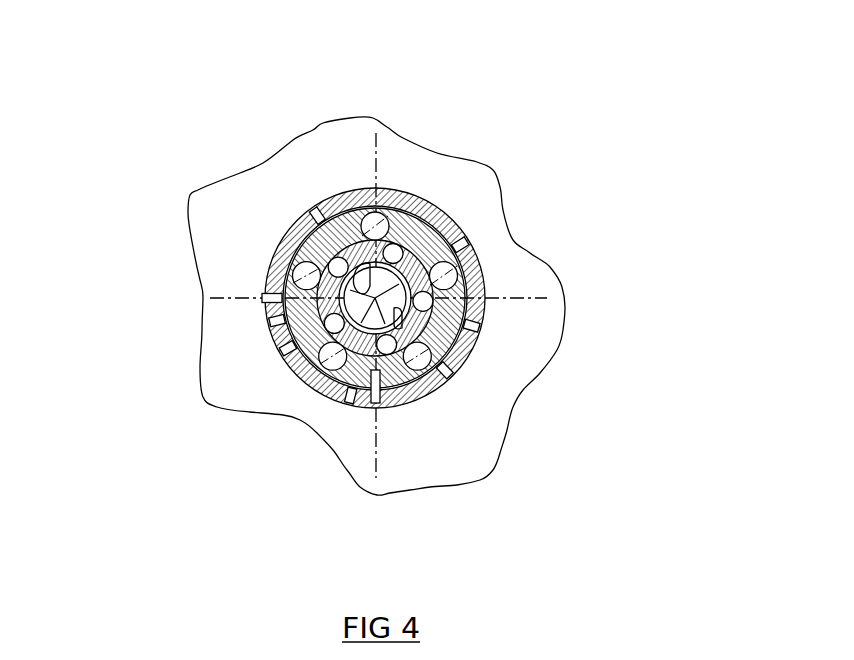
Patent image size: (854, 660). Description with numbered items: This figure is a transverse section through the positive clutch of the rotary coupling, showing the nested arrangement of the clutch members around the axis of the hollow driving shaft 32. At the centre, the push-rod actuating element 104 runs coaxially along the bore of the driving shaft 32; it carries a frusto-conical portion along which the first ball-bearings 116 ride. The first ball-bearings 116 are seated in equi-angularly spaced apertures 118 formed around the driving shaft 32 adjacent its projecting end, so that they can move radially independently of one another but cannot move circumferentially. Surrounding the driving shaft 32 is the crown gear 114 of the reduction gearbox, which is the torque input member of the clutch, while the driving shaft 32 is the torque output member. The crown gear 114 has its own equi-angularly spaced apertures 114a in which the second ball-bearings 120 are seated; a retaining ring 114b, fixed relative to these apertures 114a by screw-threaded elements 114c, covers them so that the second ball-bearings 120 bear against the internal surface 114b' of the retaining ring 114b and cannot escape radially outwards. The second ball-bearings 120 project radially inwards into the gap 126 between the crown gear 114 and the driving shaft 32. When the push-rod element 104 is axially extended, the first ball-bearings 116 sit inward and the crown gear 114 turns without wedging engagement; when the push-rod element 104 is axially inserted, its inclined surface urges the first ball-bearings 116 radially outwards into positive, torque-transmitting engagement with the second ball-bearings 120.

The driving shaft 32 is at (268, 306).
The push-rod actuating element 104 is at (452, 232).
The crown gear 114 is at (478, 352).
The apertures 114a is at (458, 247).
The retaining ring 114b is at (578, 280).
The internal surface 114b' is at (176, 251).
The screw-threaded elements 114c is at (463, 543).
The first ball-bearings 116 is at (337, 210).
The apertures 118 is at (367, 200).
The second ball-bearings 120 is at (395, 205).
The gap 126 is at (367, 407).